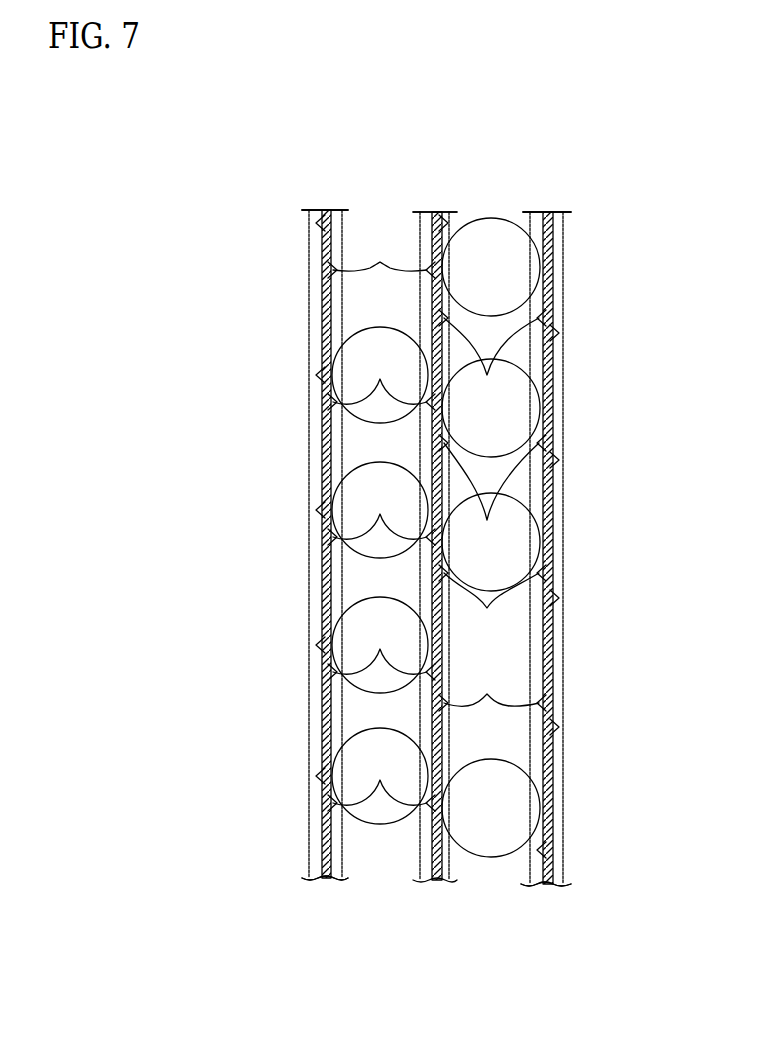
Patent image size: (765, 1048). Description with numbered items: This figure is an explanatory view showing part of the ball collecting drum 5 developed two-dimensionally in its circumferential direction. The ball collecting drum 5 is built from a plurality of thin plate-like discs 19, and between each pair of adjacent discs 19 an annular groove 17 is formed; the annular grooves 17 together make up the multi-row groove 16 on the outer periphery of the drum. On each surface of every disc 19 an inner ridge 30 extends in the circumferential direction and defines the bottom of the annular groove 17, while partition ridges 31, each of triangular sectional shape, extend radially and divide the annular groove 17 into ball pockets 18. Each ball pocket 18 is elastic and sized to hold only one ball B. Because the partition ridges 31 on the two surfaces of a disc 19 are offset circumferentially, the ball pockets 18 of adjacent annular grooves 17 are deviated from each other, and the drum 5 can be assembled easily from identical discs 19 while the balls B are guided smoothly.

The ball collecting drum 5 is at (569, 236).
The multi-row groove 16 is at (503, 962).
The annular groove 17 is at (380, 862).
The ball pocket 18 is at (370, 313).
The disc 19 is at (325, 208).
The inner ridge 30 is at (420, 305).
The partition ridge 31 is at (517, 915).
The ball B is at (486, 760).